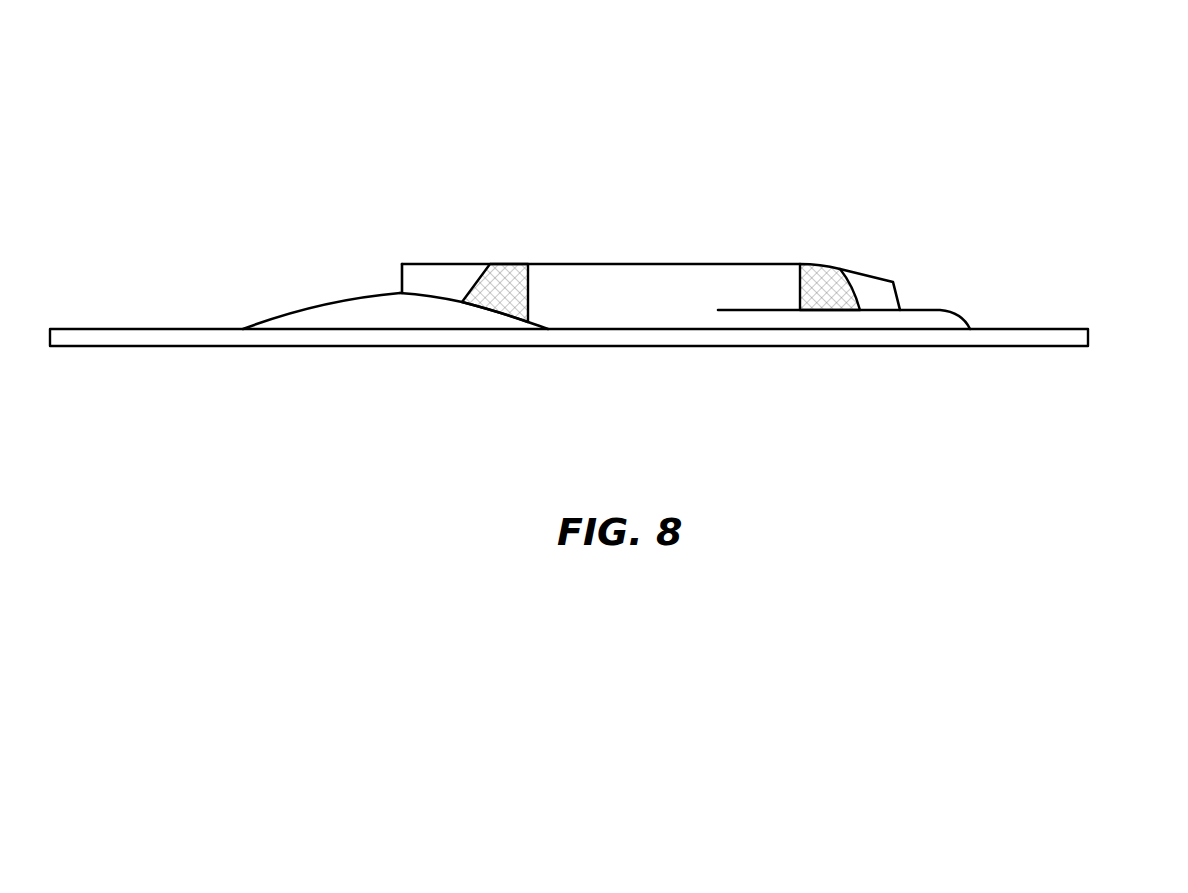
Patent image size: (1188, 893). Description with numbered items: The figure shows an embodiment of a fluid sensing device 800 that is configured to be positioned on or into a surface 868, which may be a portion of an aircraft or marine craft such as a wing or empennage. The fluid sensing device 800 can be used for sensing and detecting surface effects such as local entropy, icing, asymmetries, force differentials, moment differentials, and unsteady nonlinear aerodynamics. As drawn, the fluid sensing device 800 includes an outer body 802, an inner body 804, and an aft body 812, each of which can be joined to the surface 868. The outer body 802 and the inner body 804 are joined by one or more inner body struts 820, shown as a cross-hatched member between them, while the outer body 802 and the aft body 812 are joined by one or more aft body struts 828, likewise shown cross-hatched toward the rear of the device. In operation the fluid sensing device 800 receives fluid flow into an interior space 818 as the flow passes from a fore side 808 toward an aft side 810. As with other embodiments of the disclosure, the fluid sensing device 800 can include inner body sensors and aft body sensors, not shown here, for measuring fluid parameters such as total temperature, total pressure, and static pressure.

The fluid sensing device 800 is at (246, 146).
The outer body 802 is at (638, 264).
The inner body 804 is at (336, 305).
The fore side 808 is at (403, 264).
The aft side 810 is at (895, 282).
The aft body 812 is at (760, 310).
The interior space 818 is at (585, 310).
The inner body strut 820 is at (511, 276).
The aft body strut 828 is at (828, 300).
The surface 868 is at (1047, 329).